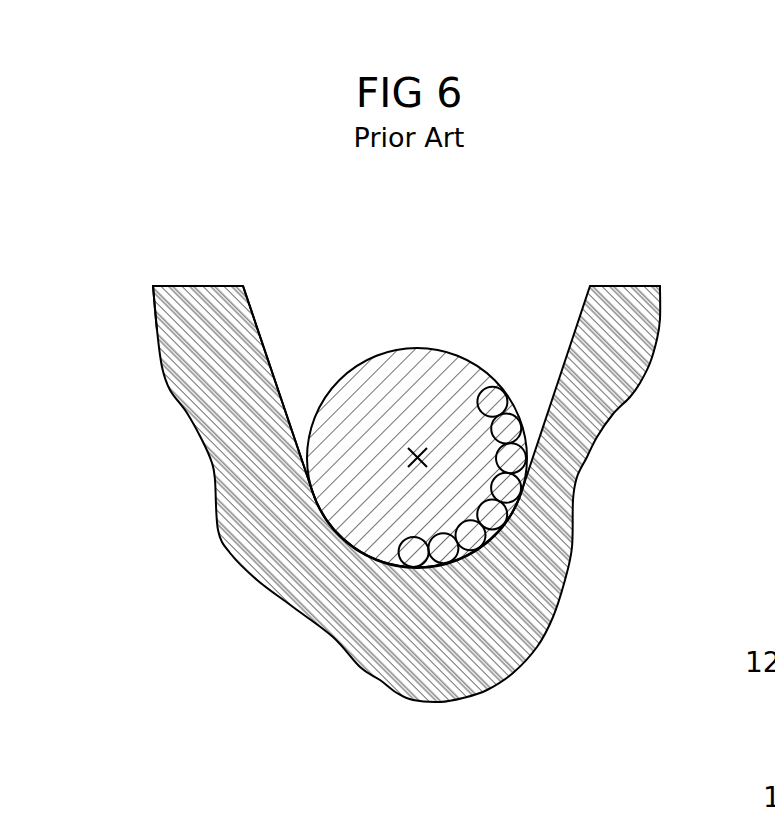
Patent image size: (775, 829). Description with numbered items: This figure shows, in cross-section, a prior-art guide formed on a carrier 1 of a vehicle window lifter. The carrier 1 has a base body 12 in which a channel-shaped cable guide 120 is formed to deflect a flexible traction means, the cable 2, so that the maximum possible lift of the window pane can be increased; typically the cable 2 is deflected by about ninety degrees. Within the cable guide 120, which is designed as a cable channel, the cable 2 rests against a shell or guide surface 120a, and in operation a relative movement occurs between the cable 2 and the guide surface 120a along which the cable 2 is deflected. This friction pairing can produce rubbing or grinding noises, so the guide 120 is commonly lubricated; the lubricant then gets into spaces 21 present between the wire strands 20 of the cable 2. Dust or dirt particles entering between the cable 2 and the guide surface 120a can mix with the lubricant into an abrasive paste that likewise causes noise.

The carrier 1 is at (683, 277).
The cable 2 is at (443, 383).
The base body 12 is at (557, 618).
The wire strands 20 is at (510, 458).
The spaces 21 is at (447, 565).
The cable guide 120 is at (298, 324).
The guide surface 120a is at (256, 315).